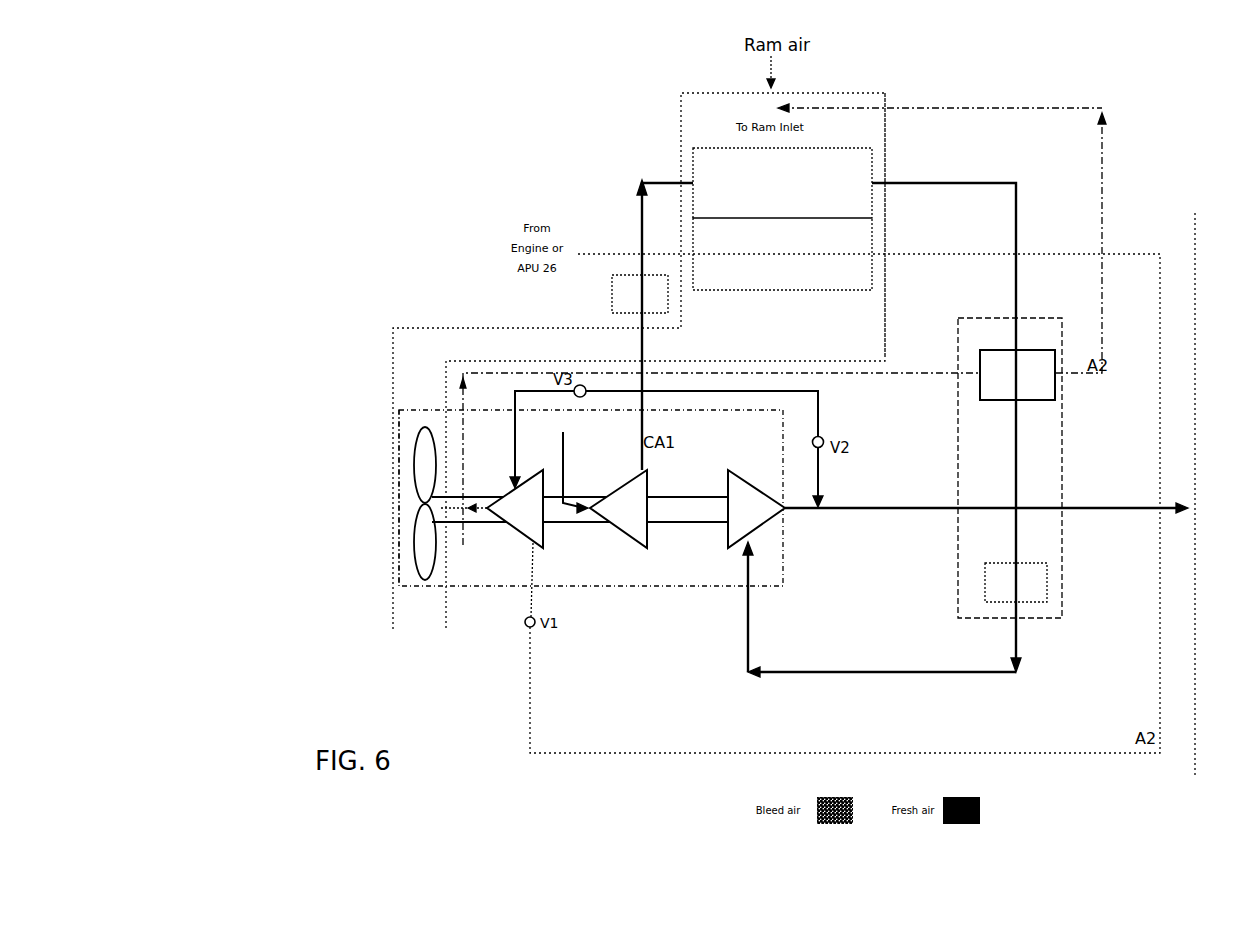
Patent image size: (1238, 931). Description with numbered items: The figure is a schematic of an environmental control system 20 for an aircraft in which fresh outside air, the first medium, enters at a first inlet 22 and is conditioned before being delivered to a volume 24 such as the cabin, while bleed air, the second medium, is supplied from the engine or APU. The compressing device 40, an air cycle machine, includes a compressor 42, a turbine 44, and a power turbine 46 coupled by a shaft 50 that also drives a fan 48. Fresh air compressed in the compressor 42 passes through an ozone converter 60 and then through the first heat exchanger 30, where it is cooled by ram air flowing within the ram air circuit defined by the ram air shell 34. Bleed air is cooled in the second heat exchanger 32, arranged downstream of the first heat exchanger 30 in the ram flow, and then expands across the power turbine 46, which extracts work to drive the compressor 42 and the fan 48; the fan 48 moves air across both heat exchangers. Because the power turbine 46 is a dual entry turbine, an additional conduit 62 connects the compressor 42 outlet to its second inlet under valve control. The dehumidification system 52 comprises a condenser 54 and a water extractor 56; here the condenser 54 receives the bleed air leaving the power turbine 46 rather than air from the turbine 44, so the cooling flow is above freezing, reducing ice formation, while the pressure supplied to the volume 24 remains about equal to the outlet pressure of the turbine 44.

The environmental control system 20 is at (332, 274).
The first inlet 22 is at (570, 462).
The volume 24 is at (1210, 494).
The first heat exchanger 30 is at (782, 183).
The second heat exchanger 32 is at (782, 254).
The ram air shell 34 is at (885, 140).
The compressing device 40 is at (392, 577).
The compressor 42 is at (630, 523).
The turbine 44 is at (762, 518).
The power turbine 46 is at (513, 528).
The fan 48 is at (421, 454).
The shaft 50 is at (690, 512).
The dehumidification system 52 is at (1063, 560).
The condenser 54 is at (1038, 350).
The water extractor 56 is at (1025, 595).
The ozone converter 60 is at (612, 295).
The additional conduit 62 is at (527, 390).